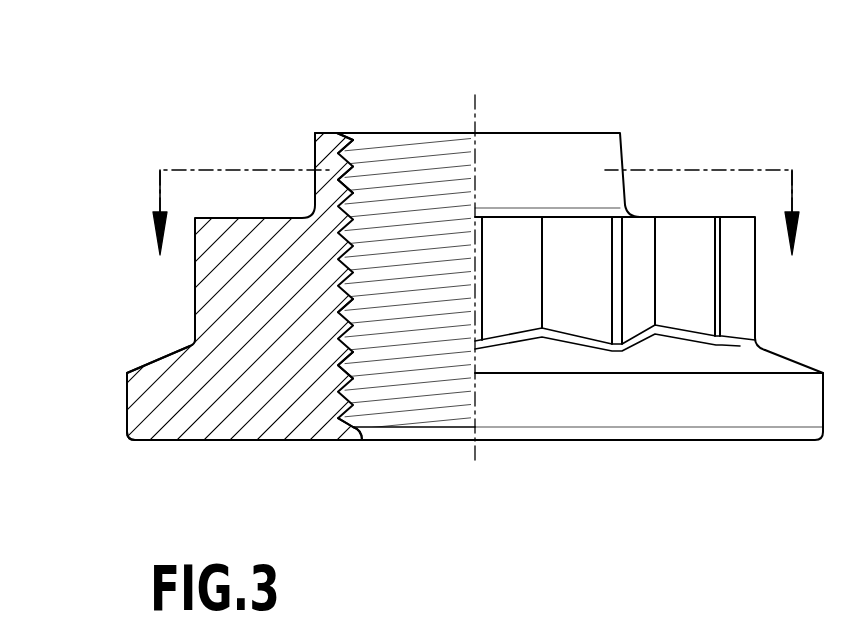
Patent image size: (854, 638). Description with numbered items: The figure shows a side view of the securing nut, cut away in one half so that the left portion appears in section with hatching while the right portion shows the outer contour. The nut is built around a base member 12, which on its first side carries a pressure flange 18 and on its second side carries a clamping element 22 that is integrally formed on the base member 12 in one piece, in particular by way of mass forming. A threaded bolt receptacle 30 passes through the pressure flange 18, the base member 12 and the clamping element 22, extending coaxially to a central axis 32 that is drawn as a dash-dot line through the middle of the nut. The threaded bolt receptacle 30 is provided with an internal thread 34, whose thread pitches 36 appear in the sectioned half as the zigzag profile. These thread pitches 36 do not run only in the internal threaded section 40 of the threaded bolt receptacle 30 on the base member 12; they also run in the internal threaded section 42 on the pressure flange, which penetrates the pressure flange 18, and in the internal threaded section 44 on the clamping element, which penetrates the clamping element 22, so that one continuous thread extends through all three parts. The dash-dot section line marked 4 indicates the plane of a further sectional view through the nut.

The base member 12 is at (238, 307).
The pressure flange 18 is at (158, 413).
The clamping element 22 is at (327, 182).
The threaded bolt receptacle 30 is at (365, 182).
The central axis 32 is at (478, 115).
The internal thread 34 is at (357, 365).
The thread pitches 36 is at (365, 143).
The internal threaded section on the base member 40 is at (353, 307).
The internal threaded section on the pressure flange 42 is at (362, 442).
The internal threaded section on the clamping element 44 is at (348, 181).
The section line IV-IV 4 is at (474, 208).